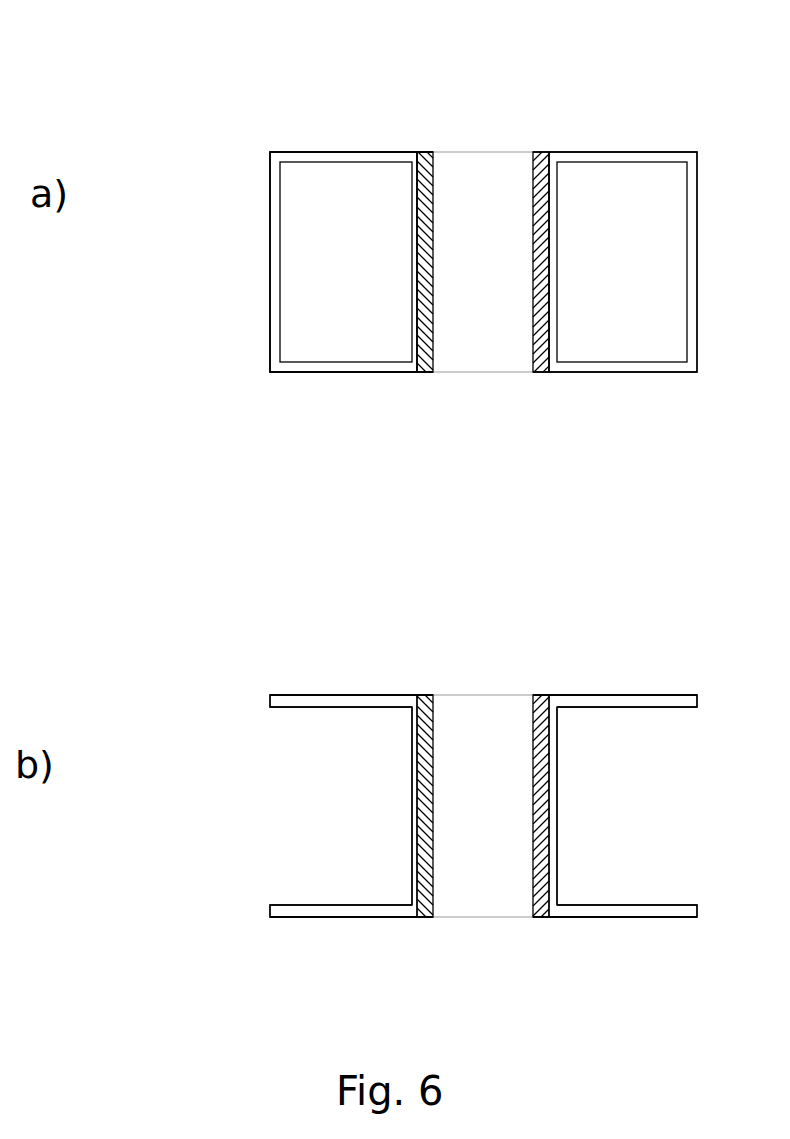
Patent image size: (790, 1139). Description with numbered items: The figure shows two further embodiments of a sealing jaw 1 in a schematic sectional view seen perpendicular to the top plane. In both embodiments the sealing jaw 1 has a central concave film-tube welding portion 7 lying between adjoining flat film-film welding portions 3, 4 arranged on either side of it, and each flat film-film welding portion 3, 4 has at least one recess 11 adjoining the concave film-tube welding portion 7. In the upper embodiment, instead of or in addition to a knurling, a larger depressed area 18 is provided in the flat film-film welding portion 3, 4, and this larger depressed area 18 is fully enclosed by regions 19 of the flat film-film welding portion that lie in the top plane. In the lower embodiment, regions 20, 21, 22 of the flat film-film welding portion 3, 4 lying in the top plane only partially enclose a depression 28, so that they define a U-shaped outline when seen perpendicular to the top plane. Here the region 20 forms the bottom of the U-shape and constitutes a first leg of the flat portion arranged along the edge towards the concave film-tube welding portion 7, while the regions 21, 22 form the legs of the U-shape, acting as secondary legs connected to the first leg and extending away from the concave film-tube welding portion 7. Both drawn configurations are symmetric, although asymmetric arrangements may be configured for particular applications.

The sealing jaw 1 is at (230, 294).
The flat film-film welding portion 3 is at (698, 88).
The flat film-film welding portion 4 is at (433, 88).
The concave film-tube welding portion 7 is at (535, 88).
The recess 11 is at (425, 700).
The larger depressed area 18 is at (322, 243).
The regions of the flat film-film welding portion 19 is at (328, 153).
The region forming the bottom of the U-shape 20 is at (415, 795).
The region forming a leg of the U-shape 21 is at (344, 701).
The region forming a leg of the U-shape 22 is at (340, 911).
The depression 28 is at (328, 820).